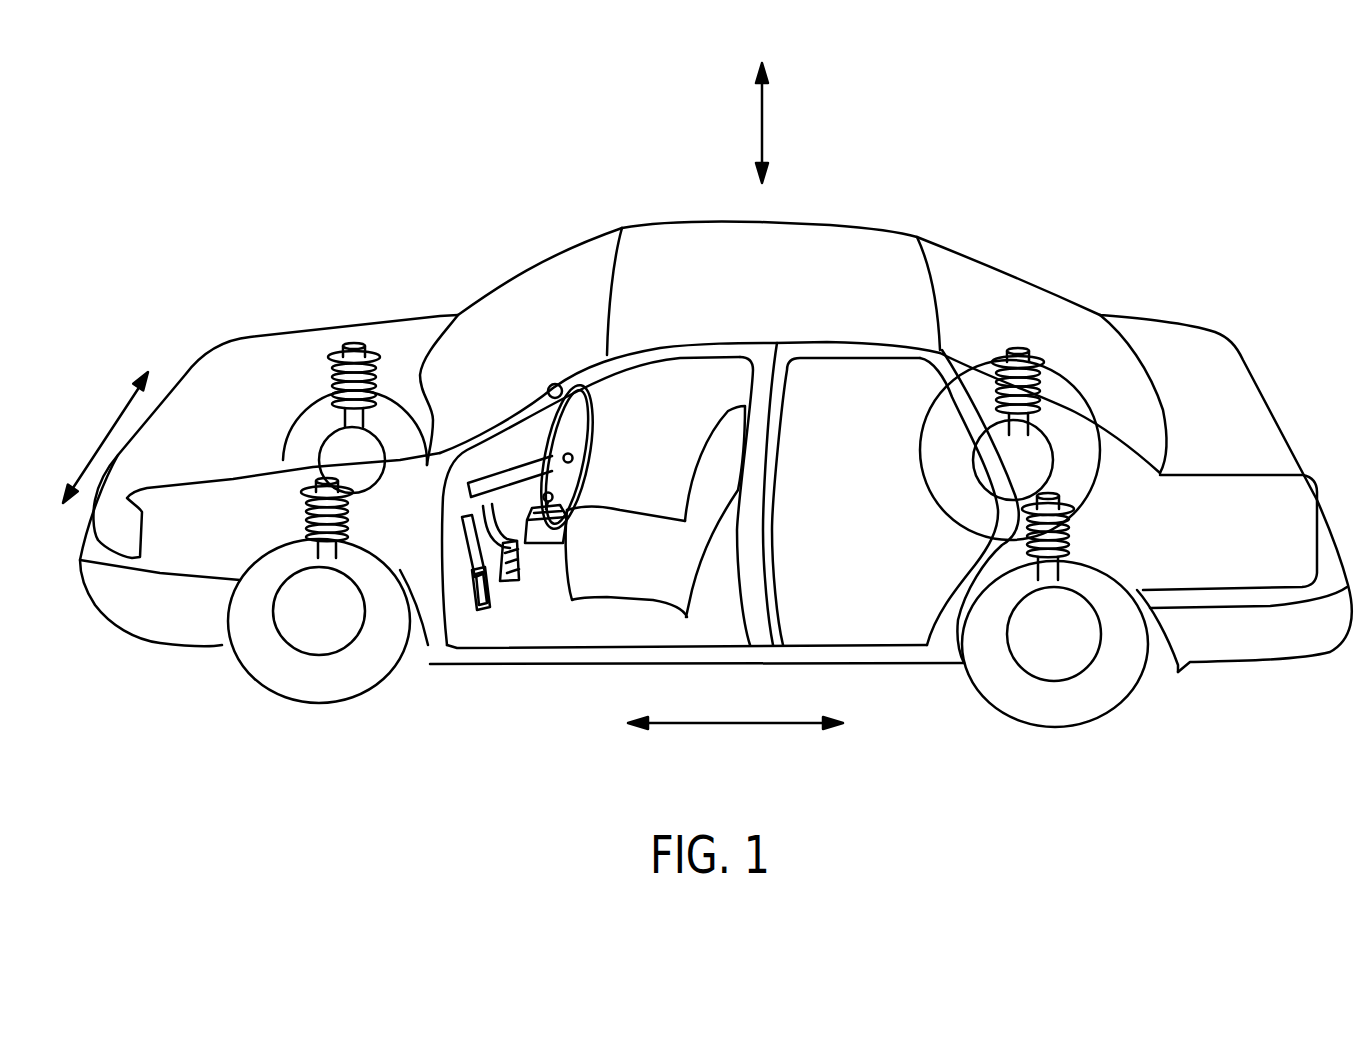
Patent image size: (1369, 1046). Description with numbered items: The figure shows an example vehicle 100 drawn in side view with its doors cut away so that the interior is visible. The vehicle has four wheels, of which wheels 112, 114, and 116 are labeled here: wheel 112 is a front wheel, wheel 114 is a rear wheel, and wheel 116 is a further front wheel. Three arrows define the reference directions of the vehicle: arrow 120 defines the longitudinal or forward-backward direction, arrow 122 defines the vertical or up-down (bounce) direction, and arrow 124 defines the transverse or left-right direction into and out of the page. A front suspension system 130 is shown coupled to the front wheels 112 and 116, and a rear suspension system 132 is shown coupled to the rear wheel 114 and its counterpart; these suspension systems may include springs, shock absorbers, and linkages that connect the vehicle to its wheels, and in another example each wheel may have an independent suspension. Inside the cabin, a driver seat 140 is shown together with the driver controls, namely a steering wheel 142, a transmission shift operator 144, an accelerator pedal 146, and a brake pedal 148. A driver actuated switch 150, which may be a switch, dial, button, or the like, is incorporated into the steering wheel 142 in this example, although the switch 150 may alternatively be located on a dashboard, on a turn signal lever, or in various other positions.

The vehicle 100 is at (1082, 195).
The wheel 112 is at (253, 658).
The wheel 114 is at (1100, 690).
The wheel 116 is at (393, 393).
The arrow 120 is at (710, 725).
The arrow 122 is at (760, 125).
The arrow 124 is at (105, 437).
The front suspension system 130 is at (350, 345).
The rear suspension system 132 is at (1016, 347).
The driver seat 140 is at (630, 582).
The steering wheel 142 is at (547, 412).
The transmission shift operator 144 is at (548, 494).
The accelerator pedal 146 is at (515, 580).
The brake pedal 148 is at (486, 610).
The driver actuated switch 150 is at (573, 457).